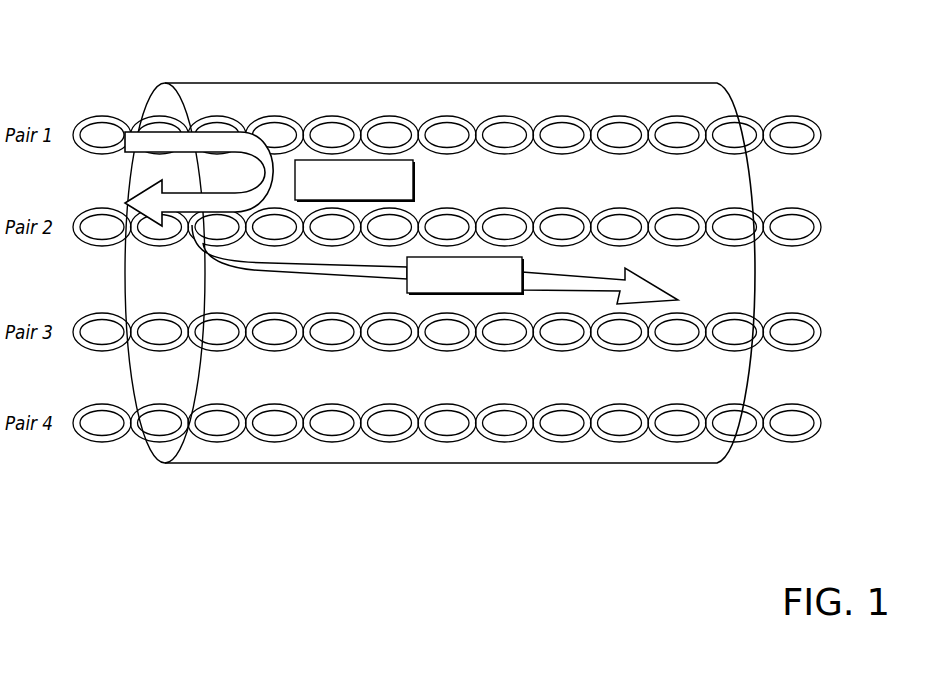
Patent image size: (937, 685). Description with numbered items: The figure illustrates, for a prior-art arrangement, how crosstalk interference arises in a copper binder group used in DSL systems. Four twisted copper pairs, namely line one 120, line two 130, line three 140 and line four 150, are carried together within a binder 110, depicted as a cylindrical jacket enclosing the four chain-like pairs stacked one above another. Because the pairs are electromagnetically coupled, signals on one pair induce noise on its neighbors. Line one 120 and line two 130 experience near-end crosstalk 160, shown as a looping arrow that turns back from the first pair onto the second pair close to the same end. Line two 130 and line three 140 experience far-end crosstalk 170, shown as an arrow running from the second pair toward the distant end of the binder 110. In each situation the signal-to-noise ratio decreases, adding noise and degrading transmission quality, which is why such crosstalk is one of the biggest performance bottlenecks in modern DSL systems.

The binder 110 is at (273, 82).
The line 1 120 is at (820, 133).
The line 2 130 is at (820, 226).
The line 3 140 is at (820, 328).
The line 4 150 is at (820, 420).
The near-end crosstalk 160 is at (413, 190).
The far-end crosstalk 170 is at (497, 257).